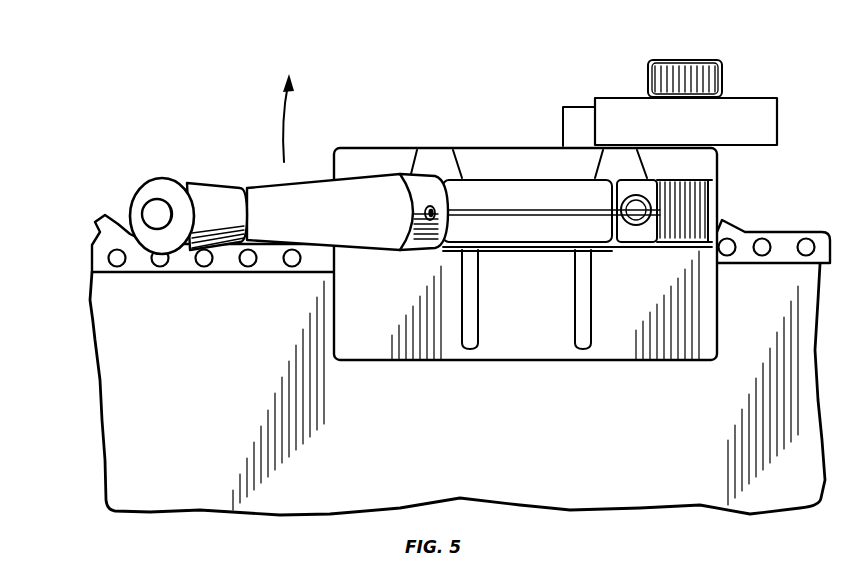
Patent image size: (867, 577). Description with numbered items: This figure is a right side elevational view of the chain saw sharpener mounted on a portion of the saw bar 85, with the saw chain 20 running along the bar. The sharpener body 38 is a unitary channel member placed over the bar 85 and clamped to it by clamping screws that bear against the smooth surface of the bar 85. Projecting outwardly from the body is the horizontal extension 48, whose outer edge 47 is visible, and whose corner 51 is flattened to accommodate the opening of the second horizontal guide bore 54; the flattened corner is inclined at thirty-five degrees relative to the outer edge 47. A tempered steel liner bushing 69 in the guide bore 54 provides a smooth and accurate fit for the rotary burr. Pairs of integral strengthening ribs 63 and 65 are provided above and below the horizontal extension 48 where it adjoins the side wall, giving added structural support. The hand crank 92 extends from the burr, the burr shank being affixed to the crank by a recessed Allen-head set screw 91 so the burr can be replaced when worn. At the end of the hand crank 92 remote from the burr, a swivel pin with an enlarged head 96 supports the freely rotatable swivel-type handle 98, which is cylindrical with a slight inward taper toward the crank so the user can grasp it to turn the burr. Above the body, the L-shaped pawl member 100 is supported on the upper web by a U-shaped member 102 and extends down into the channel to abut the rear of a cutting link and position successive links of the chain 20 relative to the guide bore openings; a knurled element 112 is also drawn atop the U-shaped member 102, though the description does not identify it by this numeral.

The saw chain 20 is at (92, 240).
The sharpener body 38 is at (648, 358).
The outer edge of the horizontal extension 47 is at (509, 238).
The horizontal extension 48 is at (505, 177).
The corner of the horizontal extension 51 is at (648, 241).
The second horizontal guide bore 54 is at (626, 237).
The strengthening ribs 63 is at (428, 156).
The strengthening ribs 65 is at (574, 318).
The liner bushing 69 is at (648, 185).
The bar of the chain saw 85 is at (180, 349).
The set screw 91 is at (424, 214).
The hand crank 92 is at (343, 240).
The enlarged head 96 is at (157, 212).
The swivel-type handle 98 is at (205, 186).
The pawl member 100 is at (566, 118).
The U-shaped member 102 is at (772, 99).
The adjusting knob 112 is at (720, 62).